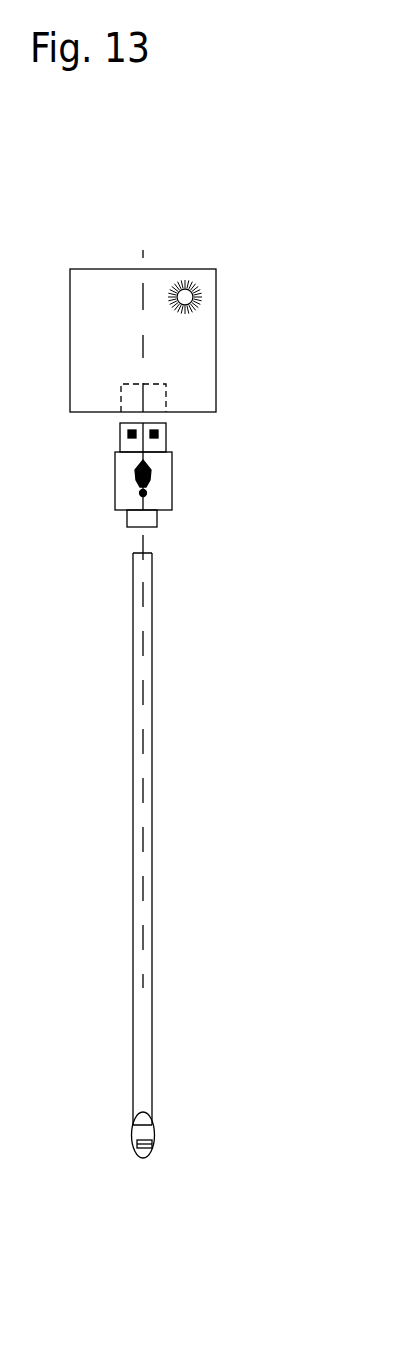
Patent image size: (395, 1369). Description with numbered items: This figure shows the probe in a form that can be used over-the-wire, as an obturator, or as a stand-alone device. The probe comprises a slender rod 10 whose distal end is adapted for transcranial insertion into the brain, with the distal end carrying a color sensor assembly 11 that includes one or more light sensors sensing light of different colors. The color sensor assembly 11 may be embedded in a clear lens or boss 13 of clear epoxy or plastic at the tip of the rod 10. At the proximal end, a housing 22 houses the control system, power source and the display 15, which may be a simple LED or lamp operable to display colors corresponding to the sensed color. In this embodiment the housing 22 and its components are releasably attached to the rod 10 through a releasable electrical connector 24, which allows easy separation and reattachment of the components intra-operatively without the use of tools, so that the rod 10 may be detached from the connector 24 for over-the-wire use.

The proximal housing 22 is at (216, 387).
The display 15 is at (193, 305).
The releasable electrical connector 24 is at (172, 485).
The slender rod 10 is at (150, 658).
The color sensor assembly 11 is at (137, 1145).
The clear lens or boss 13 is at (152, 1150).